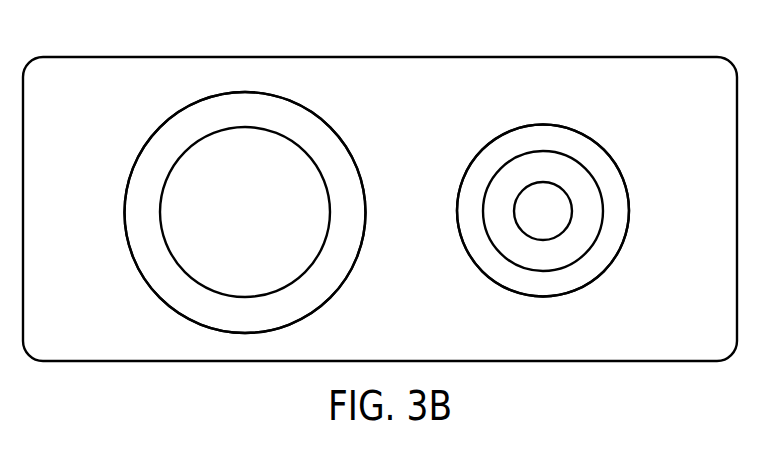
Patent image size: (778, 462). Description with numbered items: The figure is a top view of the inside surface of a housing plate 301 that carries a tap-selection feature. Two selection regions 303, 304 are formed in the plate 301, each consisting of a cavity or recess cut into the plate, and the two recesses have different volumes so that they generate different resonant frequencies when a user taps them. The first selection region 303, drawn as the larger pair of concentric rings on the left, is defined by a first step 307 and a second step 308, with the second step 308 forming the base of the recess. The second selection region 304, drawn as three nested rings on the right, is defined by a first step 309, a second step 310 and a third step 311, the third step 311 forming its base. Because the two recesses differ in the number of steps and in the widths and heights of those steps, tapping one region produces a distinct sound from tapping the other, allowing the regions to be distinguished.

The housing plate 301 is at (683, 55).
The selection region 303 is at (250, 79).
The selection region 304 is at (545, 122).
The first step 307 is at (323, 135).
The second step 308 is at (318, 207).
The first step 309 is at (580, 145).
The second step 310 is at (582, 187).
The third step 311 is at (558, 210).